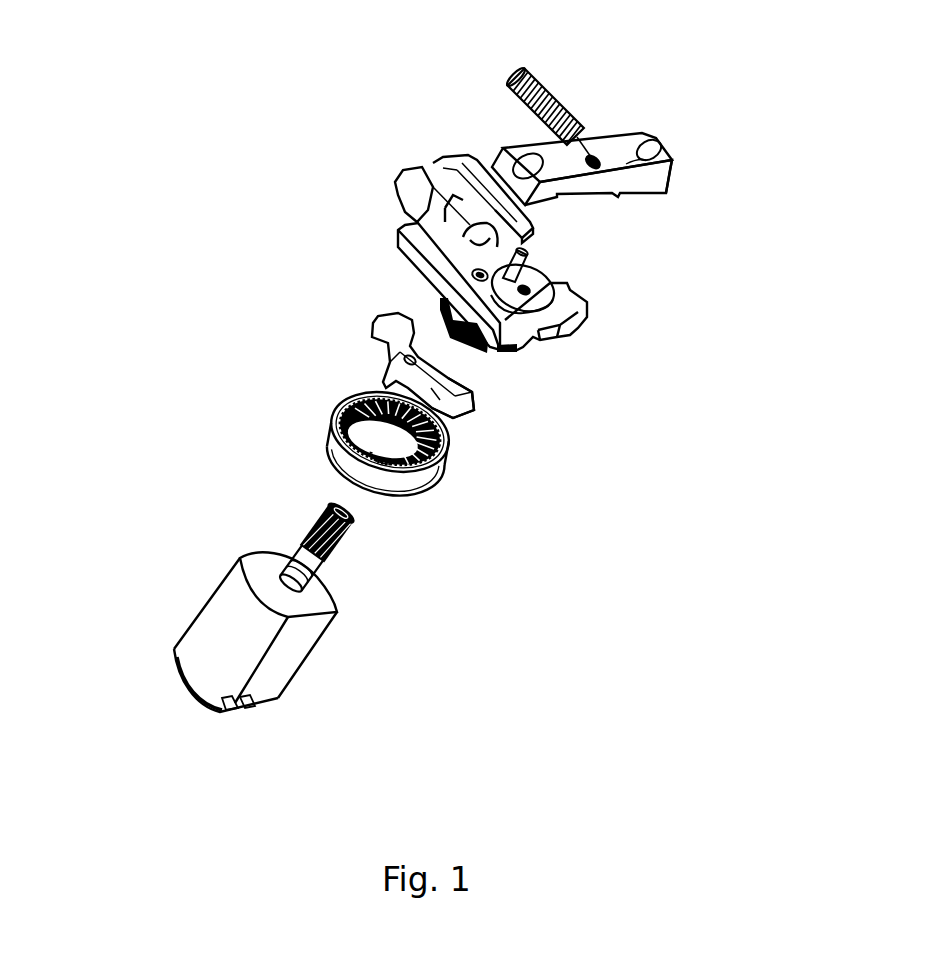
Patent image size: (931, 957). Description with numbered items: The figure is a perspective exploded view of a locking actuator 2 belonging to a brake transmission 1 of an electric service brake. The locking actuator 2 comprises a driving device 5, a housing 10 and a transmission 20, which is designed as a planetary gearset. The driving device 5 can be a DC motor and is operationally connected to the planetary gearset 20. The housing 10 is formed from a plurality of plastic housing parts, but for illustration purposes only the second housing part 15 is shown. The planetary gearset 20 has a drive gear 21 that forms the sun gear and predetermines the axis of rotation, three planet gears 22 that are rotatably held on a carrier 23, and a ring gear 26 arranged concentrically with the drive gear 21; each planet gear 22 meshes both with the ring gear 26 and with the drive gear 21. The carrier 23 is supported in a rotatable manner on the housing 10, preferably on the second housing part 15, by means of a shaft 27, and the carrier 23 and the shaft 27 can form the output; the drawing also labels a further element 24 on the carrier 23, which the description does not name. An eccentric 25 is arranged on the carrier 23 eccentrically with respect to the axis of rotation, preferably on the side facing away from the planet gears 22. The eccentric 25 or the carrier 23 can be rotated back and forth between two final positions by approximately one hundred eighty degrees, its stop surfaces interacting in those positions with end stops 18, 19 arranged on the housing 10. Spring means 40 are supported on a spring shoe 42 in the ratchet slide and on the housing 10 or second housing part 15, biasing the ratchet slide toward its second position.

The brake transmission 1 is at (212, 104).
The locking actuator 2 is at (168, 336).
The driving device 5 is at (222, 618).
The housing 10 is at (650, 169).
The second housing part 15 is at (625, 163).
The end stop 18 is at (388, 327).
The end stop 19 is at (478, 411).
The transmission 20 is at (672, 417).
The drive gear 21 is at (310, 532).
The planet gears 22 is at (500, 347).
The carrier 23 is at (480, 273).
The axis of rotation 24 is at (490, 259).
The eccentric 25 is at (556, 283).
The ring gear 26 is at (323, 442).
The shaft 27 is at (520, 256).
The spring means 40 is at (514, 82).
The spring shoe 42 is at (405, 168).